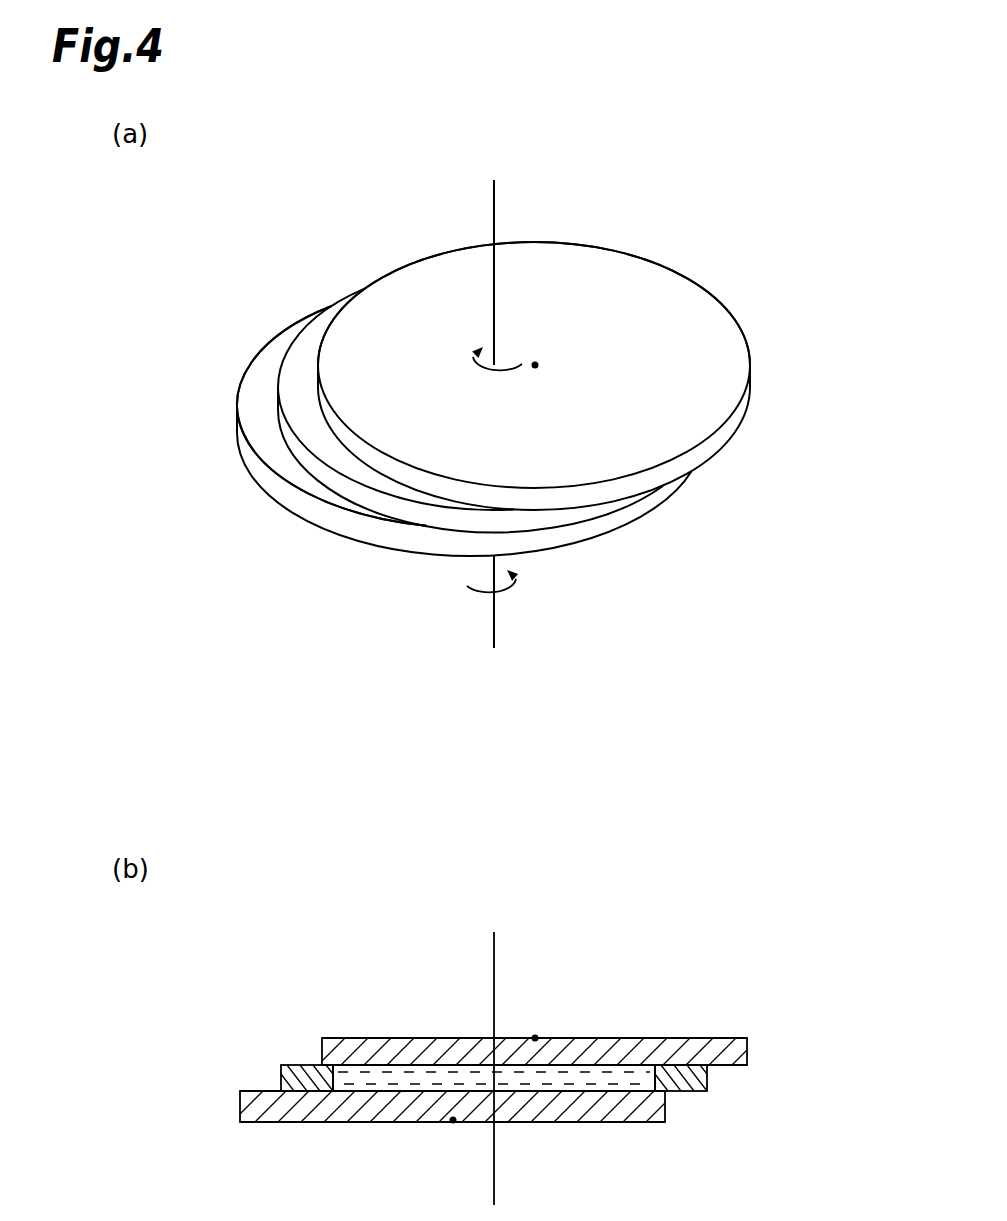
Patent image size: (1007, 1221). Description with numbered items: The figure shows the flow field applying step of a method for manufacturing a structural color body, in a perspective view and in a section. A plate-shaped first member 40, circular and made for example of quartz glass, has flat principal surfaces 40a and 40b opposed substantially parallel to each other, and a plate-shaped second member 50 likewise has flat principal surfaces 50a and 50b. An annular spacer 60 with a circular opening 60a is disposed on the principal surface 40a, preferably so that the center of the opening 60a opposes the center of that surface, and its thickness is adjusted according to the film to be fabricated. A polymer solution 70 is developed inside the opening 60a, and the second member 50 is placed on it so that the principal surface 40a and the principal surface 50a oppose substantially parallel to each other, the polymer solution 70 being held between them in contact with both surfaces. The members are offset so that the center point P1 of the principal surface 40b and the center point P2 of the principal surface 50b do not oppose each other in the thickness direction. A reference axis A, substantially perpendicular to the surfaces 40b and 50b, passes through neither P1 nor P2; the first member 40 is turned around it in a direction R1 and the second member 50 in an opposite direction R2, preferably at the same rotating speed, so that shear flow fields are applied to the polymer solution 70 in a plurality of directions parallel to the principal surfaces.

The plate-shaped member (first member) 40 is at (400, 540).
The principal surface 40a is at (260, 397).
The principal surface 40b is at (633, 1122).
The plate-shaped member (second member) 50 is at (365, 448).
The principal surface 50a is at (705, 1066).
The principal surface 50b is at (388, 322).
The spacer 60 is at (375, 500).
The opening 60a is at (337, 1073).
The polymer solution 70 is at (447, 1085).
The reference axis A is at (494, 212).
The center point P1 is at (450, 1123).
The center point P2 is at (535, 365).
The direction R1 is at (520, 585).
The direction R2 is at (492, 383).